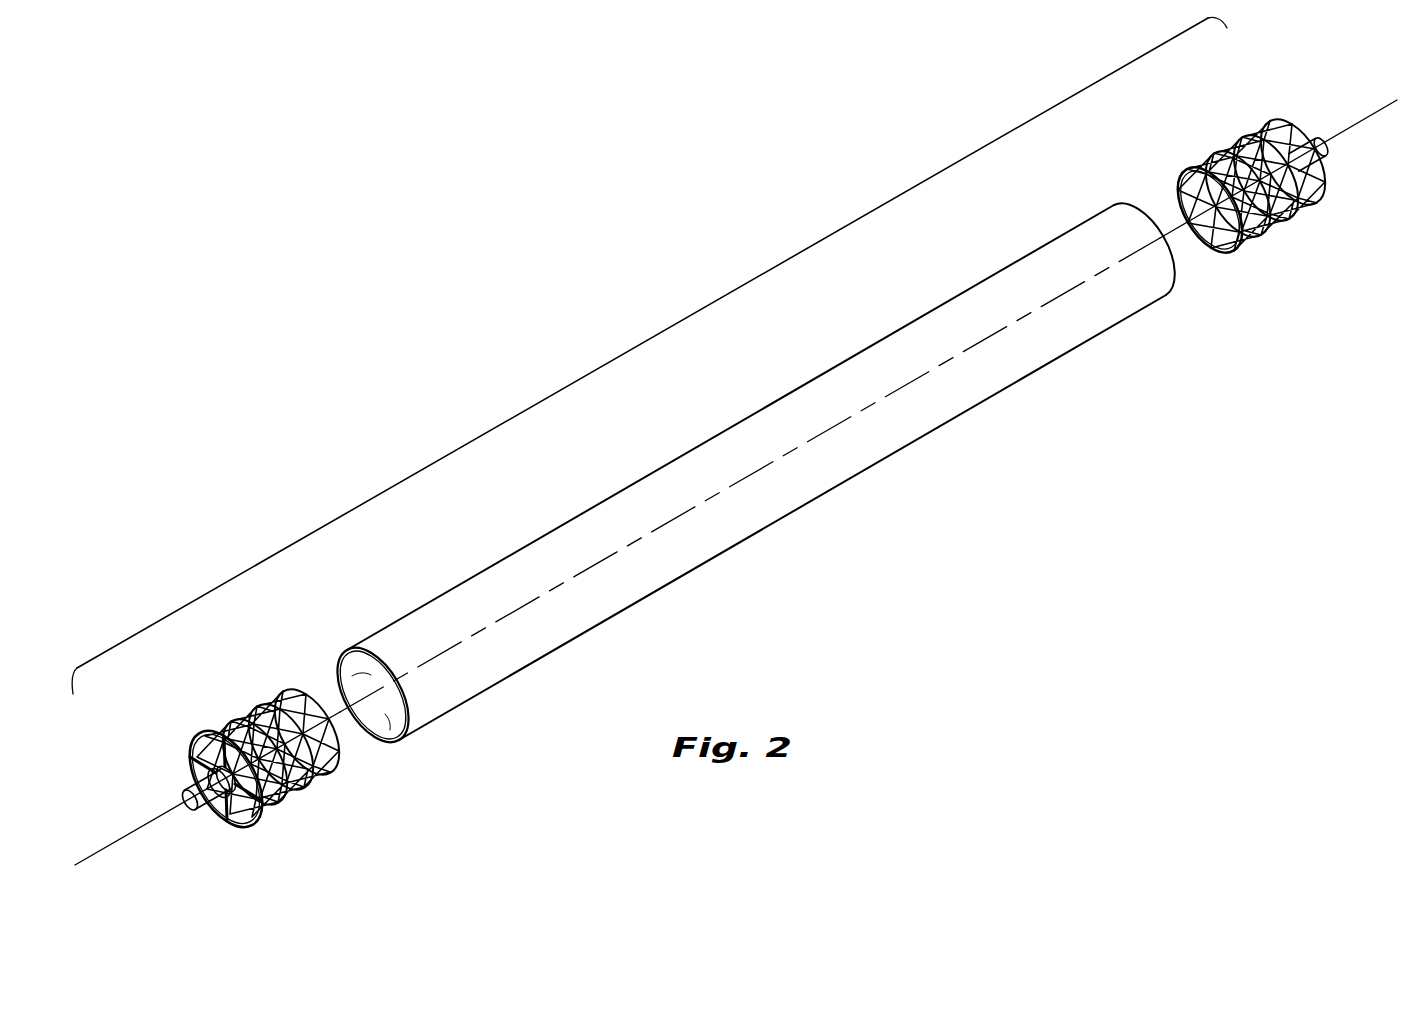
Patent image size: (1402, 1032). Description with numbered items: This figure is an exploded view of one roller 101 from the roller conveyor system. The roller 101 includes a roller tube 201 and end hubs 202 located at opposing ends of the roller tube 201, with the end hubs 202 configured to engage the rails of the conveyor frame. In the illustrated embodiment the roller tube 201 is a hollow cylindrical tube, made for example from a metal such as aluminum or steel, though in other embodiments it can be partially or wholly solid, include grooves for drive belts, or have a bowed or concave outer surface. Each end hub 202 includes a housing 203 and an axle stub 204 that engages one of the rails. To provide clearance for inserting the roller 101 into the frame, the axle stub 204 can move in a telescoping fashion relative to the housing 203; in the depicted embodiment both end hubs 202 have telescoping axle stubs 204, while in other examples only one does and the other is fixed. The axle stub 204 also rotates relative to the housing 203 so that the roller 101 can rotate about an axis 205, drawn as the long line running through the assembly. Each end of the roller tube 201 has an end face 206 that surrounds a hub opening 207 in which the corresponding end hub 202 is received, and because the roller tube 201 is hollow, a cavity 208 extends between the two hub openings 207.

The roller 101 is at (637, 347).
The roller tube 201 is at (716, 511).
The end hub 202 is at (232, 688).
The housing 203 is at (318, 770).
The axle stub 204 is at (194, 802).
The axis 205 is at (120, 838).
The end face 206 is at (338, 652).
The hub opening 207 is at (363, 673).
The cavity 208 is at (390, 720).